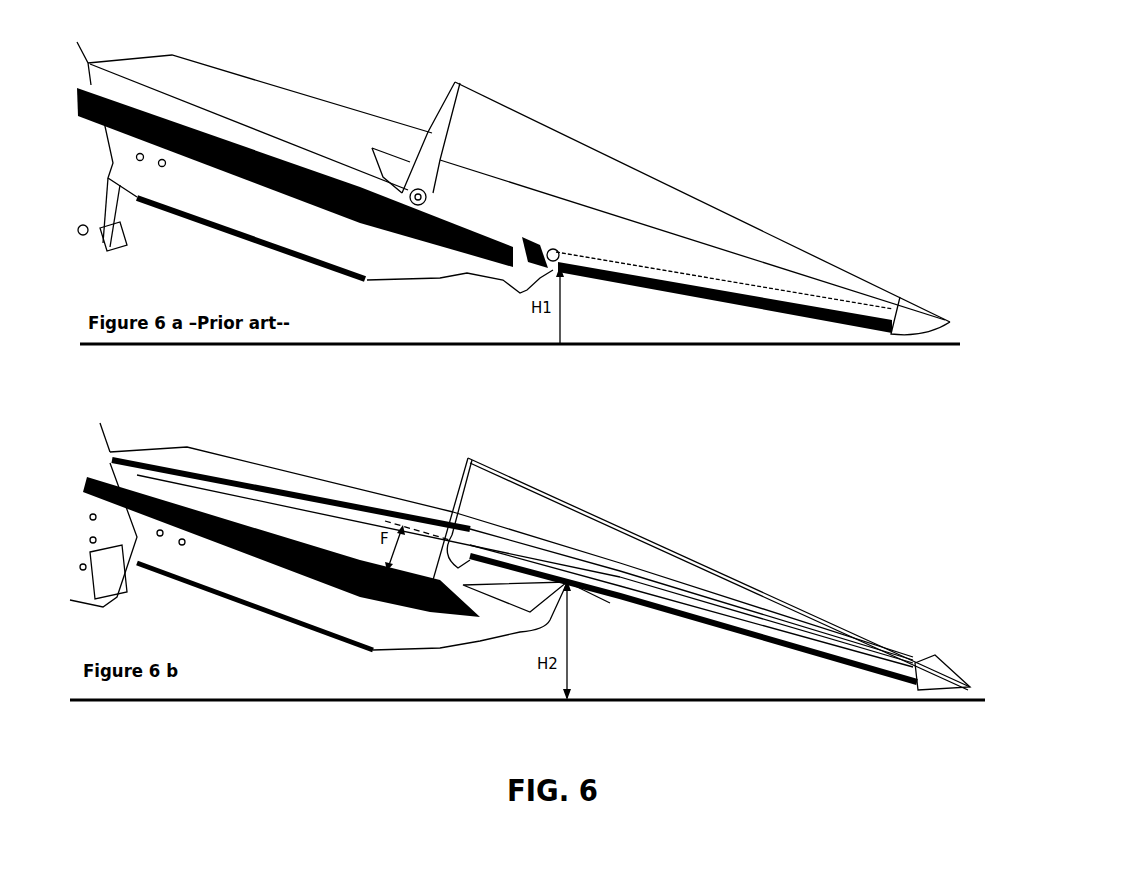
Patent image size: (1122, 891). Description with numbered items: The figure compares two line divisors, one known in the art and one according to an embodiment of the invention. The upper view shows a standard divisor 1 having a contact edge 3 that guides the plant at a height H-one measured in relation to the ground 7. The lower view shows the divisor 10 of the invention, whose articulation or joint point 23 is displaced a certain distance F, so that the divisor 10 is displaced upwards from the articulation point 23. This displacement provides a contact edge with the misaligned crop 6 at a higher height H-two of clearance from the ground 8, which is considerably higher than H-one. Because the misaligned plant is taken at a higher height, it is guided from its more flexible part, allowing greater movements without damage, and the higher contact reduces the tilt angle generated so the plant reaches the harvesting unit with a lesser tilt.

In FIG. 6a, the standard divisor 1 is at (775, 225).
In FIG. 6a, the contact edge 3 is at (699, 280).
In FIG. 6a, the ground 7 is at (843, 352).
In FIG. 6b, the line divisor 10 is at (658, 530).
In FIG. 6b, the misaligned crop 6 is at (757, 620).
In FIG. 6b, the ground 8 is at (811, 712).
In FIG. 6b, the articulation point 23 is at (443, 522).